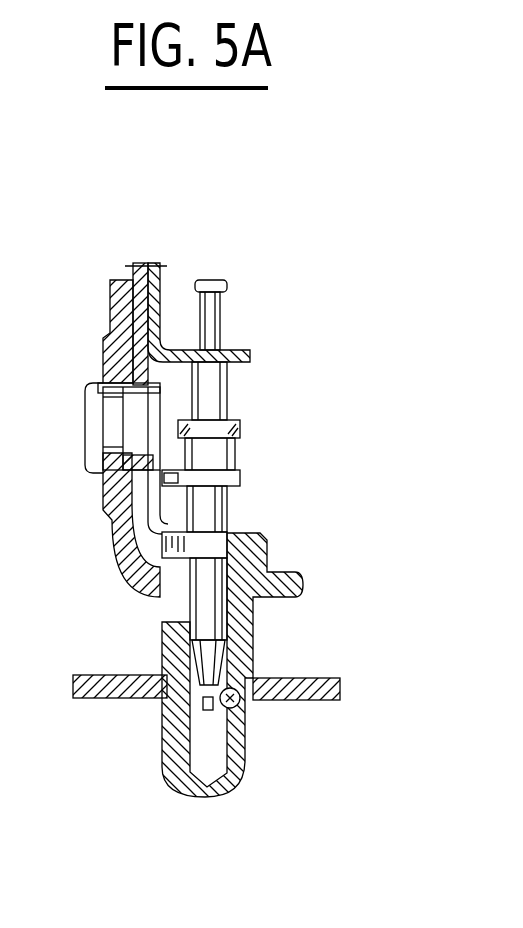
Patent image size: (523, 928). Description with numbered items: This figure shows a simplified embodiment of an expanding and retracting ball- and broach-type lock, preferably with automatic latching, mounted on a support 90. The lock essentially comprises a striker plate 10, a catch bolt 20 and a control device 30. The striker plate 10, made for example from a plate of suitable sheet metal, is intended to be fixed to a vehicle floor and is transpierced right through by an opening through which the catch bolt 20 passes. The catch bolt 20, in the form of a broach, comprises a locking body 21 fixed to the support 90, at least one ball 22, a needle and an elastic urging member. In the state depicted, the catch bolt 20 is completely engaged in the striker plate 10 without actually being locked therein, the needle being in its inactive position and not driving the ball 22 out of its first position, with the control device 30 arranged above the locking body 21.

The striker plate 10 is at (90, 675).
The catch bolt 20 is at (257, 457).
The locking body 21 is at (170, 713).
The ball 22 is at (240, 705).
The control device 30 is at (190, 267).
The support 90 is at (88, 338).